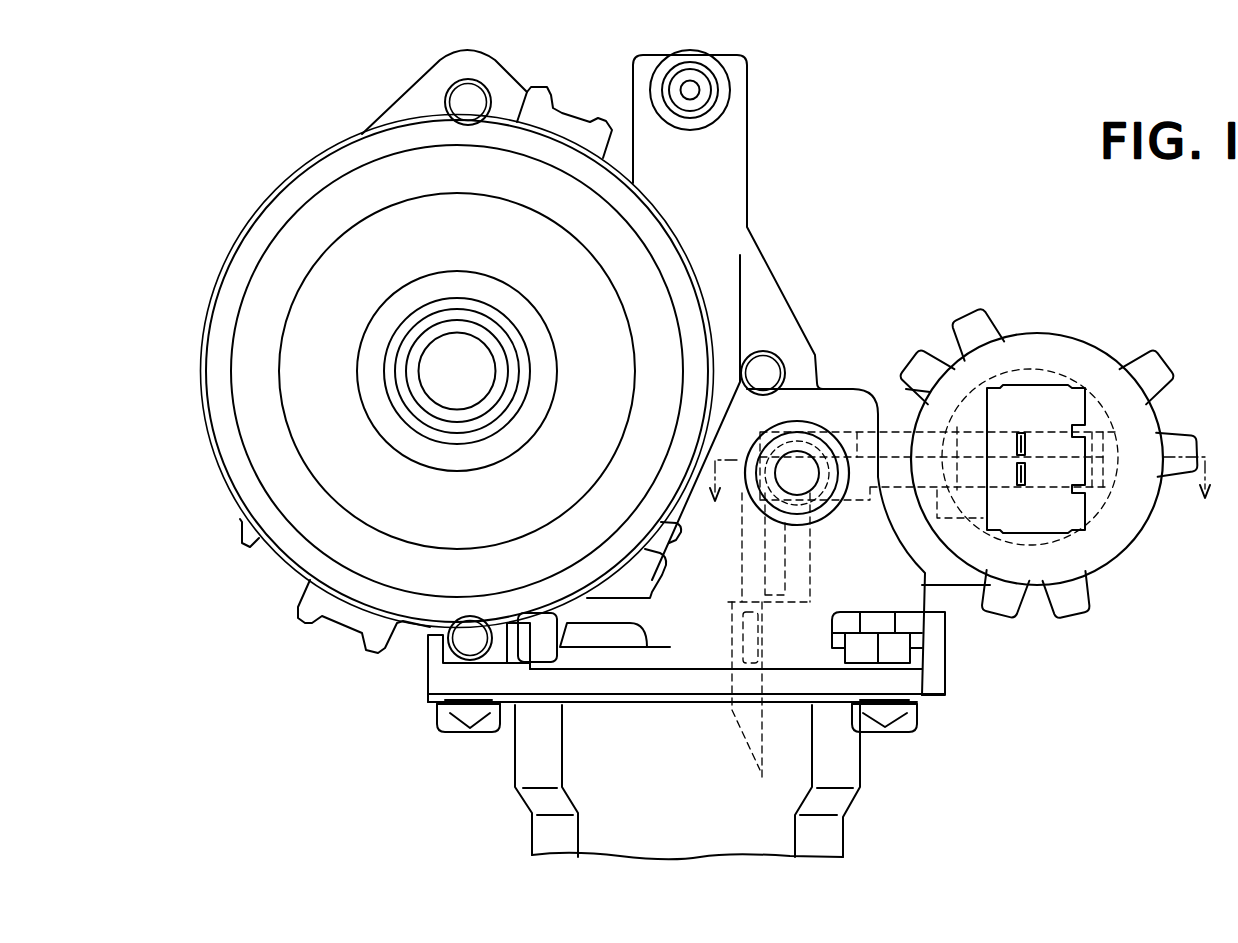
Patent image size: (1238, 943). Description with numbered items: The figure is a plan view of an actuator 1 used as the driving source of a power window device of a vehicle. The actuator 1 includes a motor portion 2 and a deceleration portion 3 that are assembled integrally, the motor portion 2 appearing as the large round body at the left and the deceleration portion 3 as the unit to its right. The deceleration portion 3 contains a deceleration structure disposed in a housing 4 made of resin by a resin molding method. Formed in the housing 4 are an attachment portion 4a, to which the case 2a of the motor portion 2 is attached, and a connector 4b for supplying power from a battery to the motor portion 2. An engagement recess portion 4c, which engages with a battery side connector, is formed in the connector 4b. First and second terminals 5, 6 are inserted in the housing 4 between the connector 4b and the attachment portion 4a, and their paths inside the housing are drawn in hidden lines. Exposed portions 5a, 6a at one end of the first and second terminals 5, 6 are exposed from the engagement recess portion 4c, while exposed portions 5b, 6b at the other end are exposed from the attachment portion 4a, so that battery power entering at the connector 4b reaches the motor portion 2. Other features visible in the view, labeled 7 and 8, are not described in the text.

The actuator 1 is at (953, 132).
The motor portion 2 is at (843, 857).
The case 2a is at (518, 758).
The deceleration portion 3 is at (301, 188).
The housing 4 is at (767, 283).
The attachment portion 4a is at (913, 683).
The connector 4b is at (1067, 347).
The engagement recess portion 4c is at (1087, 505).
The first terminal 5 is at (887, 517).
The exposed portion 5a is at (1023, 478).
The exposed portion 5b is at (753, 708).
The second terminal 6 is at (893, 430).
The exposed portion 6a is at (1023, 443).
The exposed portion 6b is at (730, 621).
The hidden circular boss 7 is at (1113, 417).
The mounting hole 8 is at (793, 432).